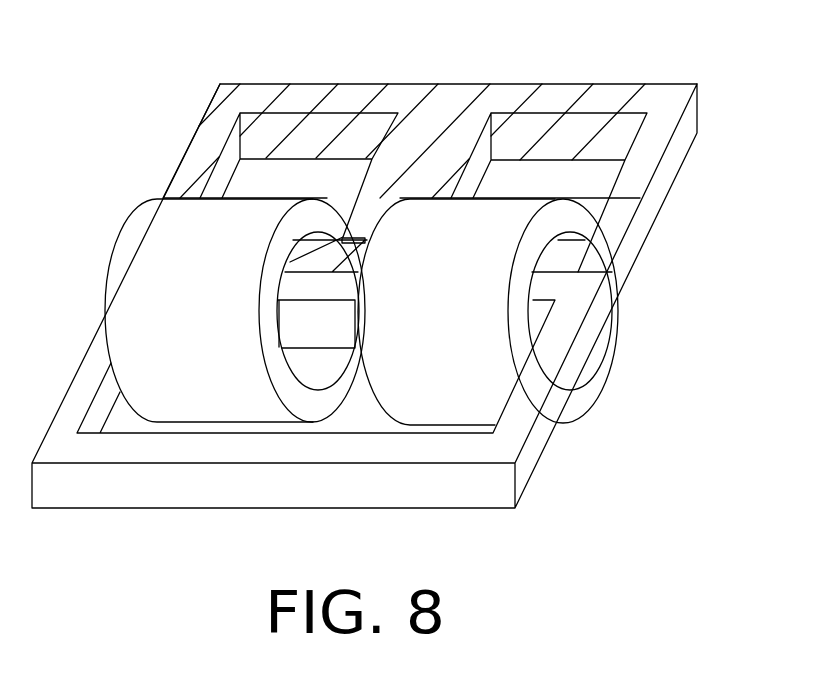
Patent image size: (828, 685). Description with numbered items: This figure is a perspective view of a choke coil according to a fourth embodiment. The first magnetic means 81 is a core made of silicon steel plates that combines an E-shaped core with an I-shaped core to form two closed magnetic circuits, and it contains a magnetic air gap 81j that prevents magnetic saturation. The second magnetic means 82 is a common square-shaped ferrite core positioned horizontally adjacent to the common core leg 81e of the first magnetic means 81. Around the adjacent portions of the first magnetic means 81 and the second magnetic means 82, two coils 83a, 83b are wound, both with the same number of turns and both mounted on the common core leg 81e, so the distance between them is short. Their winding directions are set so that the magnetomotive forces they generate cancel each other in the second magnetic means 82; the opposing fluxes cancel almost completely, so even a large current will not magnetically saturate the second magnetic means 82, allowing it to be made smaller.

The first magnetic means 81 is at (507, 92).
The common core leg 81e is at (562, 255).
The magnetic air gap 81j is at (352, 238).
The second magnetic means 82 is at (385, 495).
The coil 83a is at (127, 250).
The coil 83b is at (483, 400).